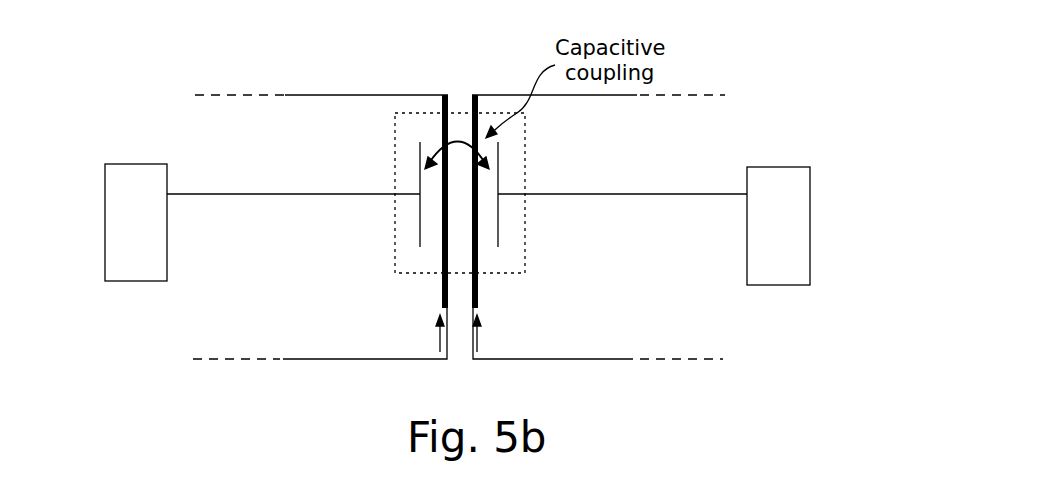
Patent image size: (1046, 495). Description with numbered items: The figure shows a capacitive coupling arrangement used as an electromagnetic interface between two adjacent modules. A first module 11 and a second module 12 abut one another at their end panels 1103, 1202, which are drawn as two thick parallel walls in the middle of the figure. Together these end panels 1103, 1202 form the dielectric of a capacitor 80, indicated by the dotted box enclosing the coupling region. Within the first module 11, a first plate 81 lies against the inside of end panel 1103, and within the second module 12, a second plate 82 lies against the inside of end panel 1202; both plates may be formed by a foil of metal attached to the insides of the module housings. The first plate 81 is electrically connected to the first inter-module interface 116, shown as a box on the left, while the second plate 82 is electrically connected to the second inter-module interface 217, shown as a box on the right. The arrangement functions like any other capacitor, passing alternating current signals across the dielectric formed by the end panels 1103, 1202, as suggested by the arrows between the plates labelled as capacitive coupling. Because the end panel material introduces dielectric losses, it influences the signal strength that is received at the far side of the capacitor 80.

The first module 11 is at (333, 122).
The second module 12 is at (663, 122).
The end panel 1103 is at (443, 127).
The end panel 1202 is at (477, 122).
The capacitor 80 is at (395, 128).
The first plate 81 is at (405, 165).
The second plate 82 is at (498, 178).
The first inter-module interface 116 is at (116, 237).
The second inter-module interface 217 is at (795, 228).